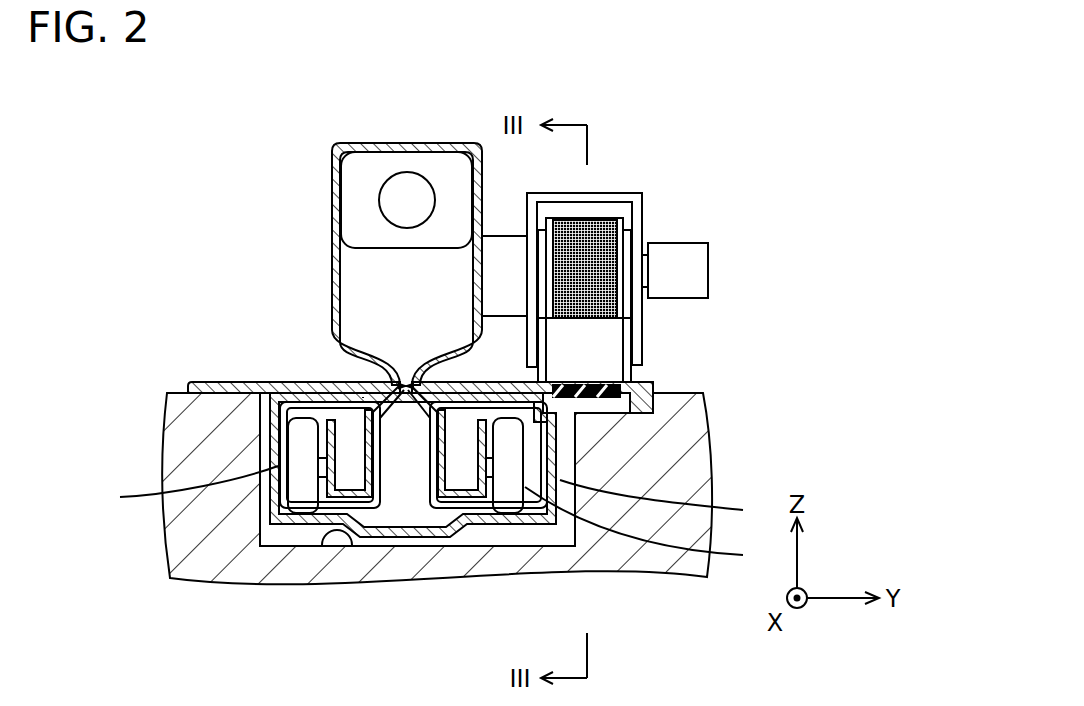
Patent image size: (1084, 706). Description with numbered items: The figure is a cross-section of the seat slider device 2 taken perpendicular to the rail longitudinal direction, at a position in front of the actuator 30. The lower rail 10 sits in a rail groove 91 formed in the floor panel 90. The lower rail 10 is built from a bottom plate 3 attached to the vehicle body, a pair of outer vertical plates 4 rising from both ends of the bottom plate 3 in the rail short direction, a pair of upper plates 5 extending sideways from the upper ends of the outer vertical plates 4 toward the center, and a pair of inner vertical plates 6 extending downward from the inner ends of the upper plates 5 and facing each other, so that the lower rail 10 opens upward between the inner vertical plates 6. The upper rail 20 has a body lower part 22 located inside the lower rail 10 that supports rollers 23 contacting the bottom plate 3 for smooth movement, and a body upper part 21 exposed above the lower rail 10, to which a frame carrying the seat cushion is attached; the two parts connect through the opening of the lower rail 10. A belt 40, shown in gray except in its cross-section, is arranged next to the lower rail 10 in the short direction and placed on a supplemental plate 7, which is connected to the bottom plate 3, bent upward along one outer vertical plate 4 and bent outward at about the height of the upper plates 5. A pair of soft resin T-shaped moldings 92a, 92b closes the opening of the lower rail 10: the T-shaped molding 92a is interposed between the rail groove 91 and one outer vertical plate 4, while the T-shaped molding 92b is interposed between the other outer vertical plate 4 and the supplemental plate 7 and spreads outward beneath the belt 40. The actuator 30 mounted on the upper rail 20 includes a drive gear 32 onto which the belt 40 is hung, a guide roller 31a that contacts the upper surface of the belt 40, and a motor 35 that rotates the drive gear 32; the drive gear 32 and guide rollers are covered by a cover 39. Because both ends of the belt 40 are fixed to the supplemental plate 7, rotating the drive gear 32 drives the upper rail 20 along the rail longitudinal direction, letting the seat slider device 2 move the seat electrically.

The seat slider device 2 is at (242, 108).
The upper rail 20 is at (343, 130).
The body upper part 21 is at (437, 147).
The actuator 30 is at (655, 244).
The cover 39 is at (598, 194).
The belt 40 is at (605, 223).
The drive gear 32 is at (622, 232).
The motor 35 is at (695, 255).
The guide roller 31a is at (617, 338).
The upper plate 5 is at (288, 397).
The inner vertical plate 6 is at (363, 397).
The T-shaped molding 92a is at (218, 388).
The T-shaped molding 92b is at (622, 384).
The floor panel 90 is at (680, 453).
The rail groove 91 is at (340, 545).
The outer vertical plate 4 is at (430, 496).
The supplemental plate 7 is at (644, 528).
The lower rail 10 is at (278, 530).
The body lower part 22 is at (433, 512).
The bottom plate 3 is at (443, 500).
The roller 23 is at (302, 500).